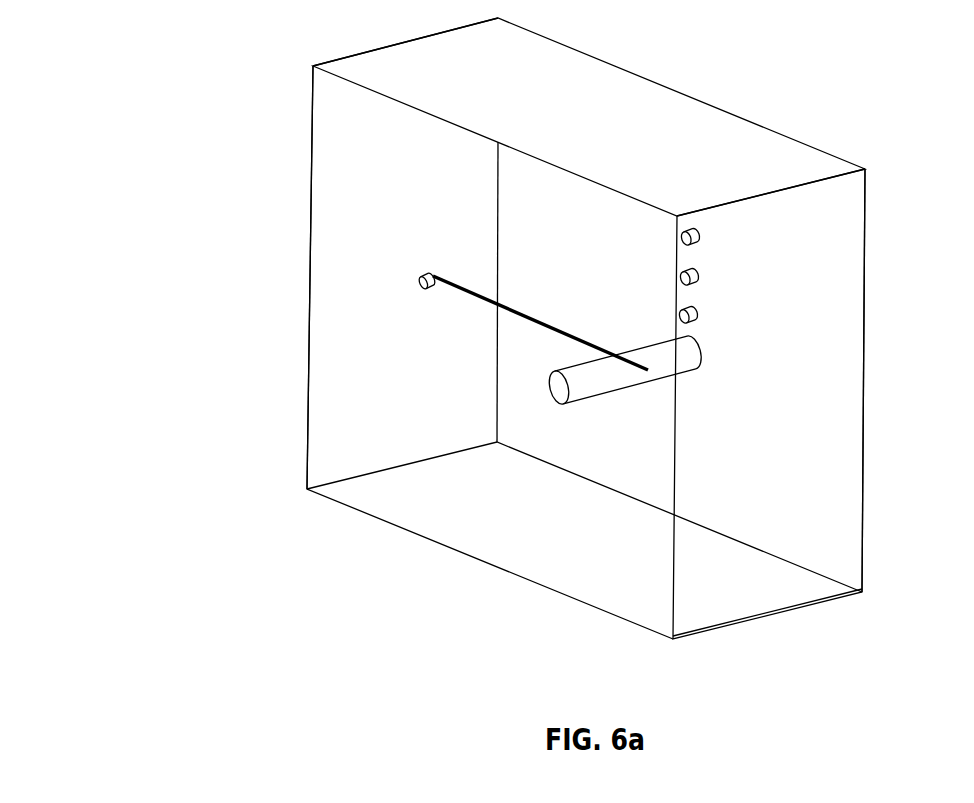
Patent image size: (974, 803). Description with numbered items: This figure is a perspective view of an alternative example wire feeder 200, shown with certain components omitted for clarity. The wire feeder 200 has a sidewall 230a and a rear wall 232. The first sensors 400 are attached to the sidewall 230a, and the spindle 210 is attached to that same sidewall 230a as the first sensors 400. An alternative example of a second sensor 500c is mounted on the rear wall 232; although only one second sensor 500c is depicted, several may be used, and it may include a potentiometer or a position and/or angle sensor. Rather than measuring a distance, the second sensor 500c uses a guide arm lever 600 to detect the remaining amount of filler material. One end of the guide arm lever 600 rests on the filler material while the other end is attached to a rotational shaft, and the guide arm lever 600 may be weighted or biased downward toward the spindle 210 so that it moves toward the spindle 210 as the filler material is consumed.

The wire feeder 200 is at (847, 225).
The rear wall 232 is at (266, 158).
The sidewall 230a is at (840, 360).
The spindle 210 is at (684, 354).
The guide arm lever 600 is at (560, 321).
The second sensor 500c is at (425, 293).
The first sensors 400 is at (705, 236).